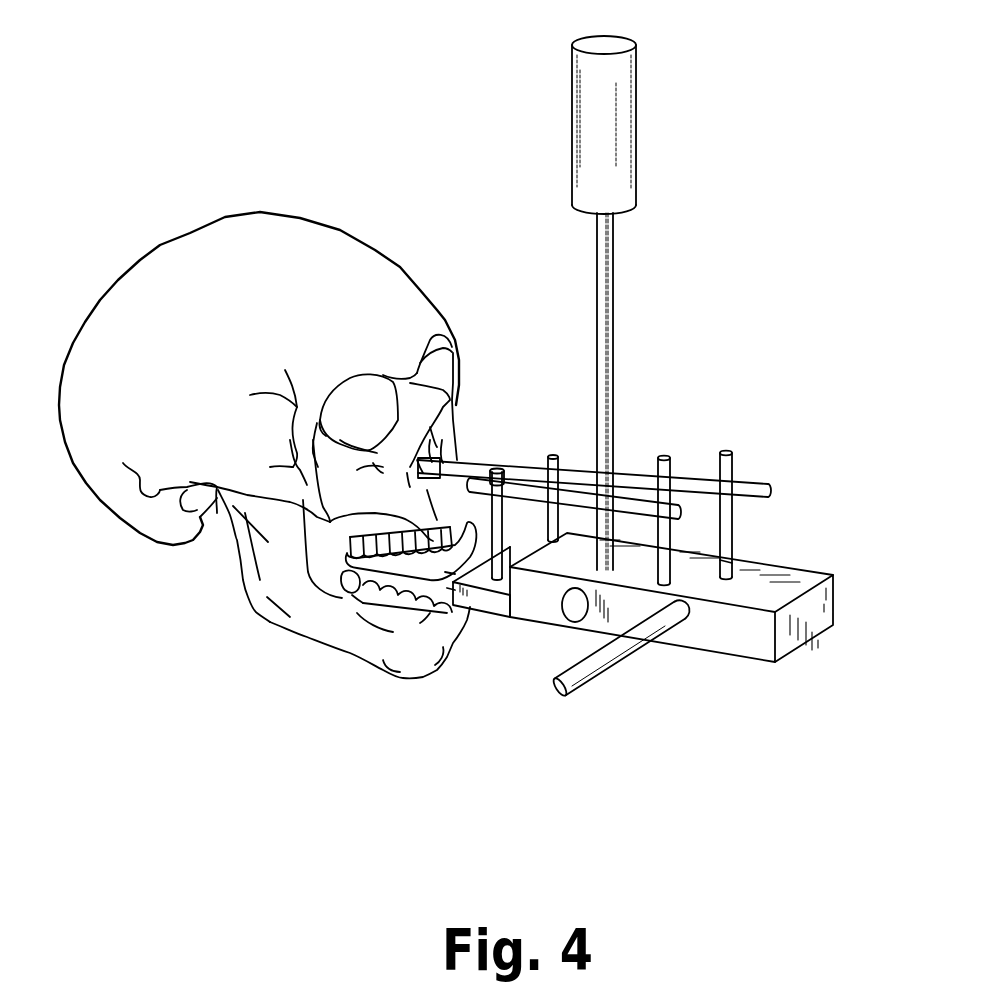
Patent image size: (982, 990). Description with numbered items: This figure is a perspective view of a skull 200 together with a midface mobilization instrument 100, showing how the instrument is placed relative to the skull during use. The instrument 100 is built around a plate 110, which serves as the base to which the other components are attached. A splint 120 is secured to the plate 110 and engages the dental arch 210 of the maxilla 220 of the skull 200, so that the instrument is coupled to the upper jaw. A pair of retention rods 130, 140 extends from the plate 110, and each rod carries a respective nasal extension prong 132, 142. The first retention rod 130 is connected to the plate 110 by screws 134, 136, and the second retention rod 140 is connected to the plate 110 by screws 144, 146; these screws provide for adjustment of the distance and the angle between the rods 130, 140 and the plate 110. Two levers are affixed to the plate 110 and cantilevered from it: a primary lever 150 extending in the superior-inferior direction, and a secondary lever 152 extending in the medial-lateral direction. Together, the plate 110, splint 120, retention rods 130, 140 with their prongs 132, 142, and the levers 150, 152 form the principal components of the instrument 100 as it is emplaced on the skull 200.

The midface mobilization instrument 100 is at (765, 377).
The plate 110 is at (757, 657).
The splint 120 is at (377, 567).
The retention rod 130 is at (625, 500).
The nasal extension prong 132 is at (455, 468).
The screw 134 is at (510, 515).
The screw 136 is at (673, 553).
The retention rod 140 is at (745, 487).
The nasal extension prong 142 is at (467, 468).
The screw 144 is at (580, 495).
The screw 146 is at (740, 545).
The primary lever 150 is at (607, 305).
The secondary lever 152 is at (617, 667).
The skull 200 is at (342, 226).
The dental arch 210 is at (353, 529).
The maxilla 220 is at (353, 530).